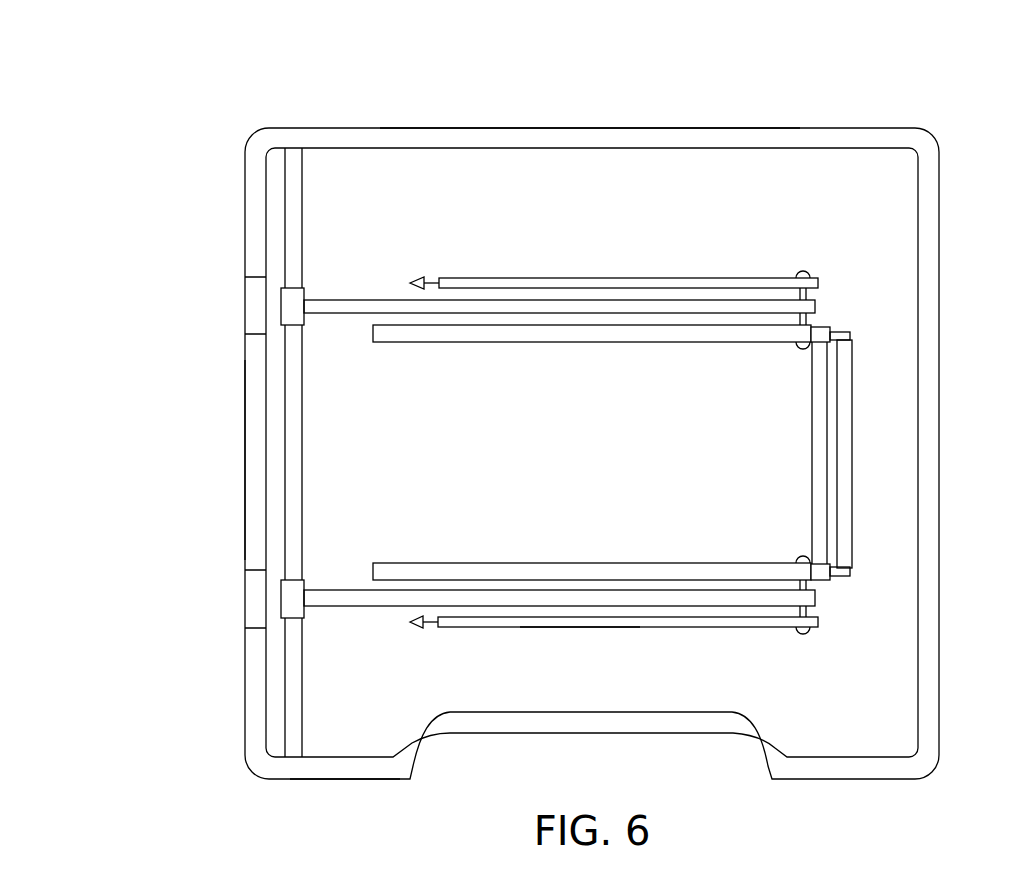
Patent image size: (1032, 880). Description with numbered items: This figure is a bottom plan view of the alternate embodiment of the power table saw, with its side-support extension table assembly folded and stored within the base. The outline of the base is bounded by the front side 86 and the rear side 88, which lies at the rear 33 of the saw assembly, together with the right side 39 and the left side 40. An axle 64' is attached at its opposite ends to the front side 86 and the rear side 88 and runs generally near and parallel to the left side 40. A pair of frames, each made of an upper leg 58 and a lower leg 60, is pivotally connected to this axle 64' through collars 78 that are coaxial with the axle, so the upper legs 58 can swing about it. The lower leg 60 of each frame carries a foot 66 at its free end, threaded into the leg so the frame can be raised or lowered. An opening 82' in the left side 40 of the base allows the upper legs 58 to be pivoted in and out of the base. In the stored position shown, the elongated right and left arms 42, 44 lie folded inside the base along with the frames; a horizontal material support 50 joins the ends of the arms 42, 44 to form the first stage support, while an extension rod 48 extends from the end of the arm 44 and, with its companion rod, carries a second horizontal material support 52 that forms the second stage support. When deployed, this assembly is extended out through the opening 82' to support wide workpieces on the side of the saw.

The rear 33 is at (598, 92).
The right side 39 is at (934, 352).
The left side 40 is at (244, 466).
The right arm 42 is at (596, 330).
The left arm 44 is at (510, 572).
The extension rod 48 is at (577, 622).
The horizontal material support 50 is at (846, 487).
The horizontal material support 52 is at (822, 422).
The upper leg 58 is at (633, 304).
The lower leg 60 is at (707, 283).
The axle 64' is at (334, 452).
The foot 66 is at (418, 278).
The collar 78 is at (293, 299).
The opening 82' is at (223, 452).
The front side 86 is at (343, 766).
The rear side 88 is at (343, 142).